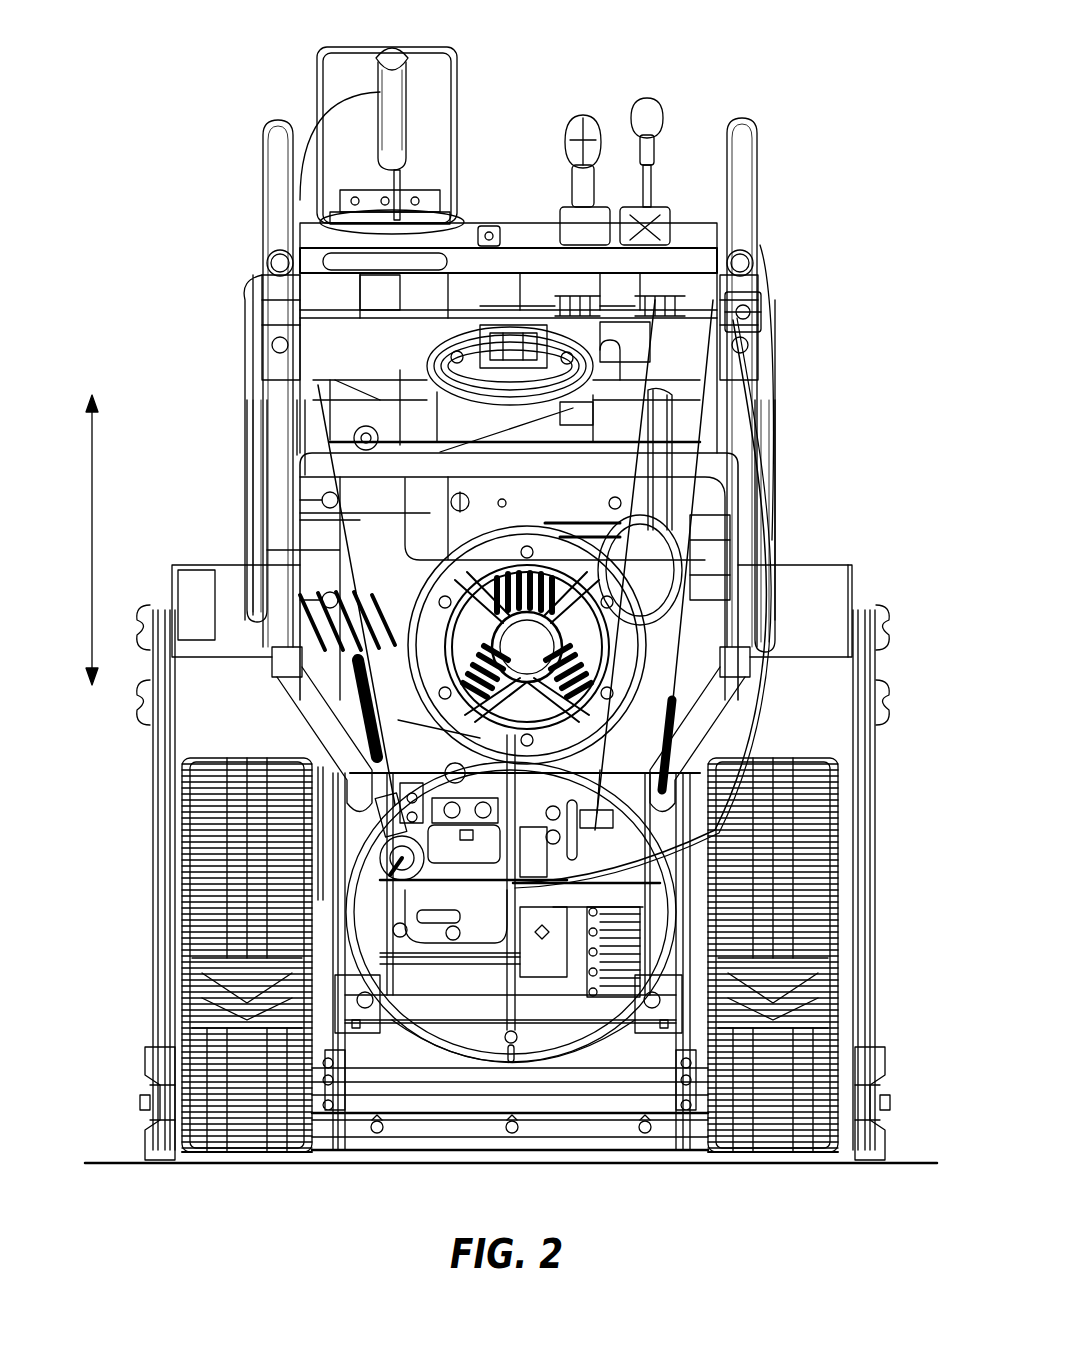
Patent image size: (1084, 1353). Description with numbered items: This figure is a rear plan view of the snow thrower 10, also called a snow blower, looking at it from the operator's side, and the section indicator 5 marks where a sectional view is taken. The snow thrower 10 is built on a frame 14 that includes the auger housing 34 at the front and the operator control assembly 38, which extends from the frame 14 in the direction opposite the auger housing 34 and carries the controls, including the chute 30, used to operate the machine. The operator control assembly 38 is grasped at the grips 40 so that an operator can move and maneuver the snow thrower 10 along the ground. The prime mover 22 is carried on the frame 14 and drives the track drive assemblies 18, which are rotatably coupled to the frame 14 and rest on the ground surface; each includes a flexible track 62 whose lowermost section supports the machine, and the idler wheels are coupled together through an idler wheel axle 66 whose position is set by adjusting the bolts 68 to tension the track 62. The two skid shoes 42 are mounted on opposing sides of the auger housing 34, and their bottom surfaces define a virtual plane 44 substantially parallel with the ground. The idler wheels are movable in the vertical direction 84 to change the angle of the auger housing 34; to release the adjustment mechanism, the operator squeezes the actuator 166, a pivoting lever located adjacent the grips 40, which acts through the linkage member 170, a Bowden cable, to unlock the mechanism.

The snow thrower 10 is at (200, 135).
The frame 14 is at (617, 1097).
The track drive assemblies 18 is at (240, 1170).
The prime mover 22 is at (250, 480).
The chute 30 is at (484, 92).
The auger housing 34 is at (820, 560).
The operator control assembly 38 is at (483, 225).
The grips 40 is at (282, 262).
The skid shoes 42 is at (150, 1060).
The virtual plane 44 is at (905, 1160).
The flexible track 62 is at (190, 1162).
The idler wheel axle 66 is at (438, 1007).
The bolts 68 is at (380, 1007).
The vertical direction 84 is at (80, 515).
The actuator 166 is at (750, 310).
The linkage member 170 is at (765, 710).
The section line 5 is at (533, 170).